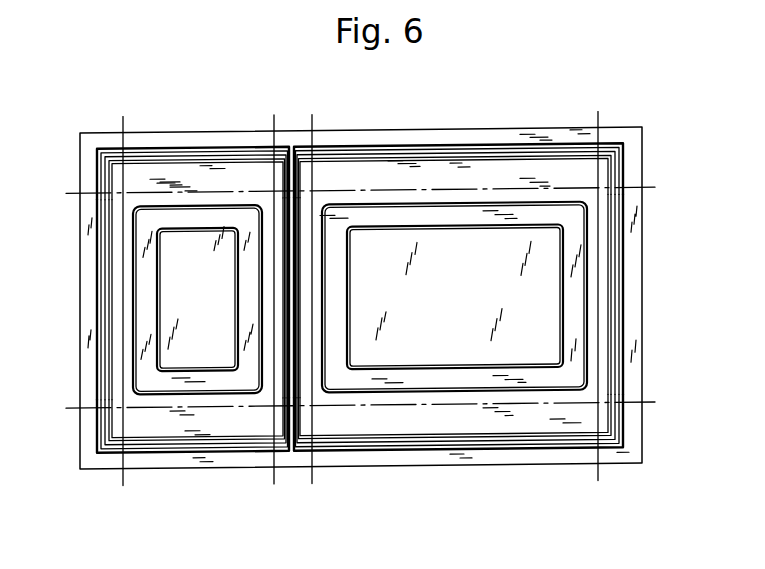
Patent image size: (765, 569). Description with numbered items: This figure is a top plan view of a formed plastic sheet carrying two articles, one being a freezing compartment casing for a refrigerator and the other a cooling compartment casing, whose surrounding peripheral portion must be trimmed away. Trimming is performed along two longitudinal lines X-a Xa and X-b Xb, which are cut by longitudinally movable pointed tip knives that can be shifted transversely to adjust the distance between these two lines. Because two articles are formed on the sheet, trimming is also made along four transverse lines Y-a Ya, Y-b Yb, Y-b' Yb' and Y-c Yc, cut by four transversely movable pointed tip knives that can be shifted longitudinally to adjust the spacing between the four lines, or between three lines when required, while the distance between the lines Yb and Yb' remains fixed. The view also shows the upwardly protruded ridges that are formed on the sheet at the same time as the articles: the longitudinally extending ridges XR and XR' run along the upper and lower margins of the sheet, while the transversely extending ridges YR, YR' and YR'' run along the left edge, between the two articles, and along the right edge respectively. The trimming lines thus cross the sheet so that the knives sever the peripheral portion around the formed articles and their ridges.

The transverse trimming line Y-a Ya is at (121, 302).
The transverse trimming line Y-b Yb is at (274, 302).
The transverse trimming line Y-b' Yb' is at (315, 302).
The transverse trimming line Y-c Yc is at (597, 300).
The longitudinal trimming line X-a Xa is at (365, 188).
The longitudinal trimming line X-b Xb is at (366, 402).
The longitudinally extending ridge XR is at (360, 136).
The longitudinally extending ridge XR' is at (360, 463).
The transversely extending ridge YR is at (66, 300).
The transversely extending ridge YR' is at (244, 364).
The transversely extending ridge YR'' is at (658, 293).